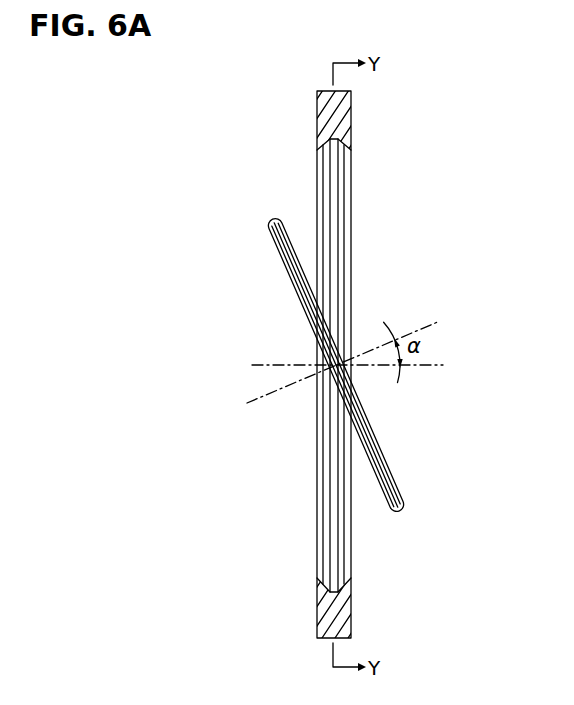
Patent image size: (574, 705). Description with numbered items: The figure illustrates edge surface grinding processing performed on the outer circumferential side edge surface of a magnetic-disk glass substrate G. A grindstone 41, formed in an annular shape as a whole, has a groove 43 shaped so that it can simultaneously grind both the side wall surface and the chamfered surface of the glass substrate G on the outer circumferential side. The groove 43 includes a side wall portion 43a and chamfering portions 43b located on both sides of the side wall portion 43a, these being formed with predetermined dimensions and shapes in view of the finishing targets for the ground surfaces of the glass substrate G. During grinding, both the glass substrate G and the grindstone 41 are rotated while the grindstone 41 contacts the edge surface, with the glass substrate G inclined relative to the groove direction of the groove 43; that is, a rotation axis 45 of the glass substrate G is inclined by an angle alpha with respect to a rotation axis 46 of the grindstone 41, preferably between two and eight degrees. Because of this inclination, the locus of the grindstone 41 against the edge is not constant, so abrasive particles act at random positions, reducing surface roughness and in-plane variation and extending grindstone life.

The grindstone 41 is at (388, 142).
The groove 43 is at (411, 365).
The side wall portion 43a is at (332, 190).
The chamfering portions 43b is at (326, 190).
The rotation axis of the glass substrate 45 is at (359, 353).
The rotation axis of the grindstone 46 is at (362, 365).
The glass substrate G is at (286, 295).